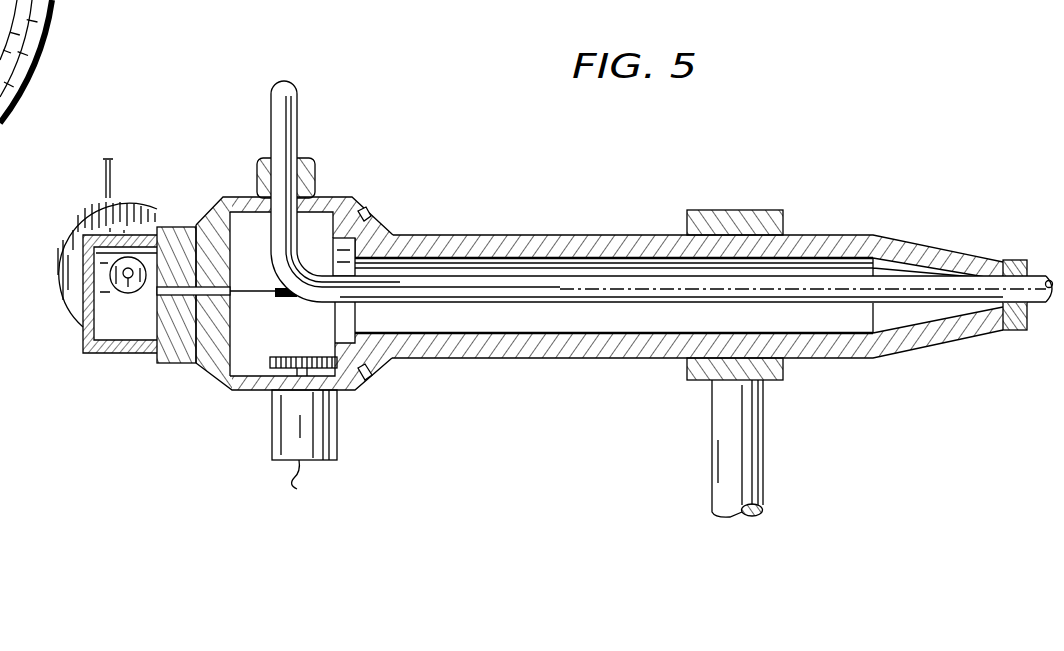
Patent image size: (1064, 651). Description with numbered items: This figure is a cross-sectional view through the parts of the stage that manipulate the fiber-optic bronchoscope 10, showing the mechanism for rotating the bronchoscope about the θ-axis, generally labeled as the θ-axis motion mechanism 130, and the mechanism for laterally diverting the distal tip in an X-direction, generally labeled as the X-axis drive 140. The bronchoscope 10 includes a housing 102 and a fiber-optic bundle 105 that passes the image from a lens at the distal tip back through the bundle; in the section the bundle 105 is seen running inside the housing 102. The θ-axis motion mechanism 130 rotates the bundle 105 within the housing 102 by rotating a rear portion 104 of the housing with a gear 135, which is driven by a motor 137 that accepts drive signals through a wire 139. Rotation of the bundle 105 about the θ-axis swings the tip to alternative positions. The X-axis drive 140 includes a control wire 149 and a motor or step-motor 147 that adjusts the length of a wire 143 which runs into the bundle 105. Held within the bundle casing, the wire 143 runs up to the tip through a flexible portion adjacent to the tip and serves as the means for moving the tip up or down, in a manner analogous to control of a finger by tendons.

The fiber-optic bronchoscope 10 is at (842, 527).
The housing 102 is at (579, 233).
The rear portion of the housing 104 is at (323, 193).
The fiber-optic bundle 105 is at (298, 103).
The θ-axis motion mechanism 130 is at (367, 192).
The gear 135 is at (270, 362).
The motor 137 is at (318, 438).
The wire 139 is at (296, 487).
The X-axis drive 140 is at (204, 198).
The wire 143 is at (233, 373).
The step-motor 147 is at (91, 200).
The control wire 149 is at (111, 170).